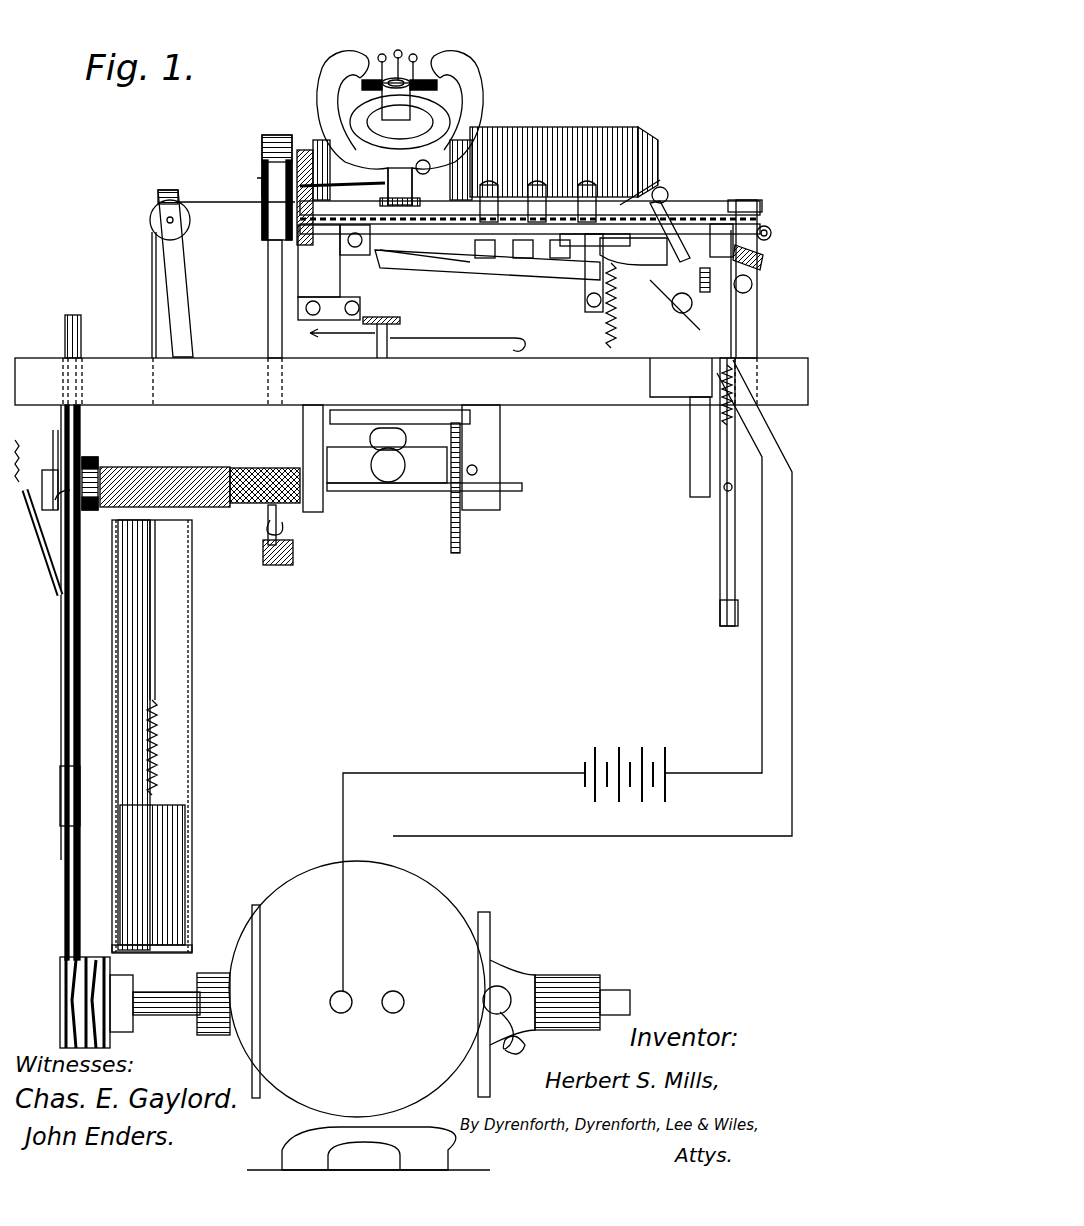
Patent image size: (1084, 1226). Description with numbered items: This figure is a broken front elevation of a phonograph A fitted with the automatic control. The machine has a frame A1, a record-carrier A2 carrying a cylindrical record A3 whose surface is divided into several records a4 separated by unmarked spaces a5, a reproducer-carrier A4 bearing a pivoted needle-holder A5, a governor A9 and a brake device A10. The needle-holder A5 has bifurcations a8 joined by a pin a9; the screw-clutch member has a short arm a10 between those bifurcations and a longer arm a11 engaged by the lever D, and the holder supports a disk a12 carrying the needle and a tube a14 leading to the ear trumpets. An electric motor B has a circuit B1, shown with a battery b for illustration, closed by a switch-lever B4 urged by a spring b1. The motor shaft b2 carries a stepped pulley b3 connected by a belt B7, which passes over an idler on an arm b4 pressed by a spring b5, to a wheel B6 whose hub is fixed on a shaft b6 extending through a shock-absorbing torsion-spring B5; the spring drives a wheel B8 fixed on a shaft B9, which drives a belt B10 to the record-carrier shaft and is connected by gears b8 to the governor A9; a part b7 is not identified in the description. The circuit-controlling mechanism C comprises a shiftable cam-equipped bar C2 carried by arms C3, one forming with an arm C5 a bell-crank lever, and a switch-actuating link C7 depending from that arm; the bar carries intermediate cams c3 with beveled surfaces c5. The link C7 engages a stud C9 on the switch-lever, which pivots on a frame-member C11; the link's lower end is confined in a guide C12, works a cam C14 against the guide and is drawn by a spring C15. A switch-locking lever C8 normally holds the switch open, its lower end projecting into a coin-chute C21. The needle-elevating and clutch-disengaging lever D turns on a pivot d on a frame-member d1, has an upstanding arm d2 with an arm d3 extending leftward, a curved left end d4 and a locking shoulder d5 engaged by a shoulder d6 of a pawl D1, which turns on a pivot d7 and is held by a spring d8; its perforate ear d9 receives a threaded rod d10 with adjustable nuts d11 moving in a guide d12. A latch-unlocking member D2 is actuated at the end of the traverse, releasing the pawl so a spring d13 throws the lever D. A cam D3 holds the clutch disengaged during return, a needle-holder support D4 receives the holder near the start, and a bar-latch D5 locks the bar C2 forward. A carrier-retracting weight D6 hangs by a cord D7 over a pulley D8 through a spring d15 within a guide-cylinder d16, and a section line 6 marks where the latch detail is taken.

The phonograph A is at (555, 70).
The frame A1 is at (752, 345).
The record-carrier A2 is at (652, 140).
The cylindrical record A3 is at (565, 130).
The reproducer-carrier A4 is at (468, 110).
The needle-holder A5 is at (345, 110).
The governor A9 is at (411, 381).
The brake device A10 is at (457, 345).
The records a4 is at (645, 130).
The unmarked spaces a5 is at (600, 132).
The bifurcations a8 is at (416, 150).
The pin a9 is at (400, 131).
The short arm a10 is at (412, 195).
The longer arm a11 is at (416, 279).
The disk a12 is at (440, 80).
The tube a14 is at (405, 82).
The electric motor B is at (429, 1015).
The circuit B1 is at (515, 835).
The switch-lever B4 is at (720, 430).
The power-transmission torsion-spring B5 is at (215, 520).
The wheel B6 is at (85, 325).
The belt B7 is at (70, 695).
The wheel B8 is at (290, 555).
The shaft B9 is at (360, 500).
The belt B10 is at (272, 295).
The battery b is at (504, 857).
The spring b1 is at (740, 372).
The motor shaft b2 is at (160, 1010).
The stepped pulley b3 is at (65, 830).
The arm b4 is at (65, 733).
The spring b5 is at (45, 595).
The shaft b6 is at (258, 470).
The hook b7 is at (290, 540).
The gears b8 is at (455, 510).
The circuit-controlling mechanism C is at (752, 215).
The cam-equipped switch-actuating bar C2 is at (745, 205).
The arms C3 is at (790, 207).
The arm C5 is at (772, 236).
The switch-actuating link C7 is at (681, 377).
The switch-locking lever C8 is at (720, 505).
The stud C9 is at (740, 425).
The frame-member C11 is at (715, 455).
The guide C12 is at (732, 488).
The cam C14 is at (768, 265).
The spring C15 is at (730, 495).
The coin-chute C21 is at (722, 558).
The intermediate cams c3 is at (528, 252).
The beveled surfaces c5 is at (526, 252).
The needle-elevating and clutch-disengaging lever D is at (502, 279).
The pawl D1 is at (666, 340).
The latch-unlocking member D2 is at (710, 195).
The cam D3 is at (519, 302).
The needle-holder support D4 is at (349, 291).
The bar-latch D5 is at (268, 150).
The carrier-retracting weight D6 is at (165, 858).
The cord D7 is at (155, 580).
The pulley D8 is at (150, 216).
The pivot d is at (545, 308).
The frame-member d1 is at (422, 308).
The upwardly extending arm d2 is at (666, 233).
The arm d3 is at (650, 185).
The curved end d4 is at (410, 288).
The locking shoulder d5 is at (664, 305).
The locking shoulder d6 is at (667, 312).
The pivot d7 is at (735, 320).
The spring d8 is at (717, 296).
The perforate ear d9 is at (671, 190).
The threaded rod d10 is at (720, 195).
The adjustable nuts d11 is at (690, 195).
The guide d12 is at (725, 212).
The spring d13 is at (606, 330).
The spring d15 is at (157, 745).
The guide-cylinder d16 is at (193, 780).
The section line 6 is at (342, 346).